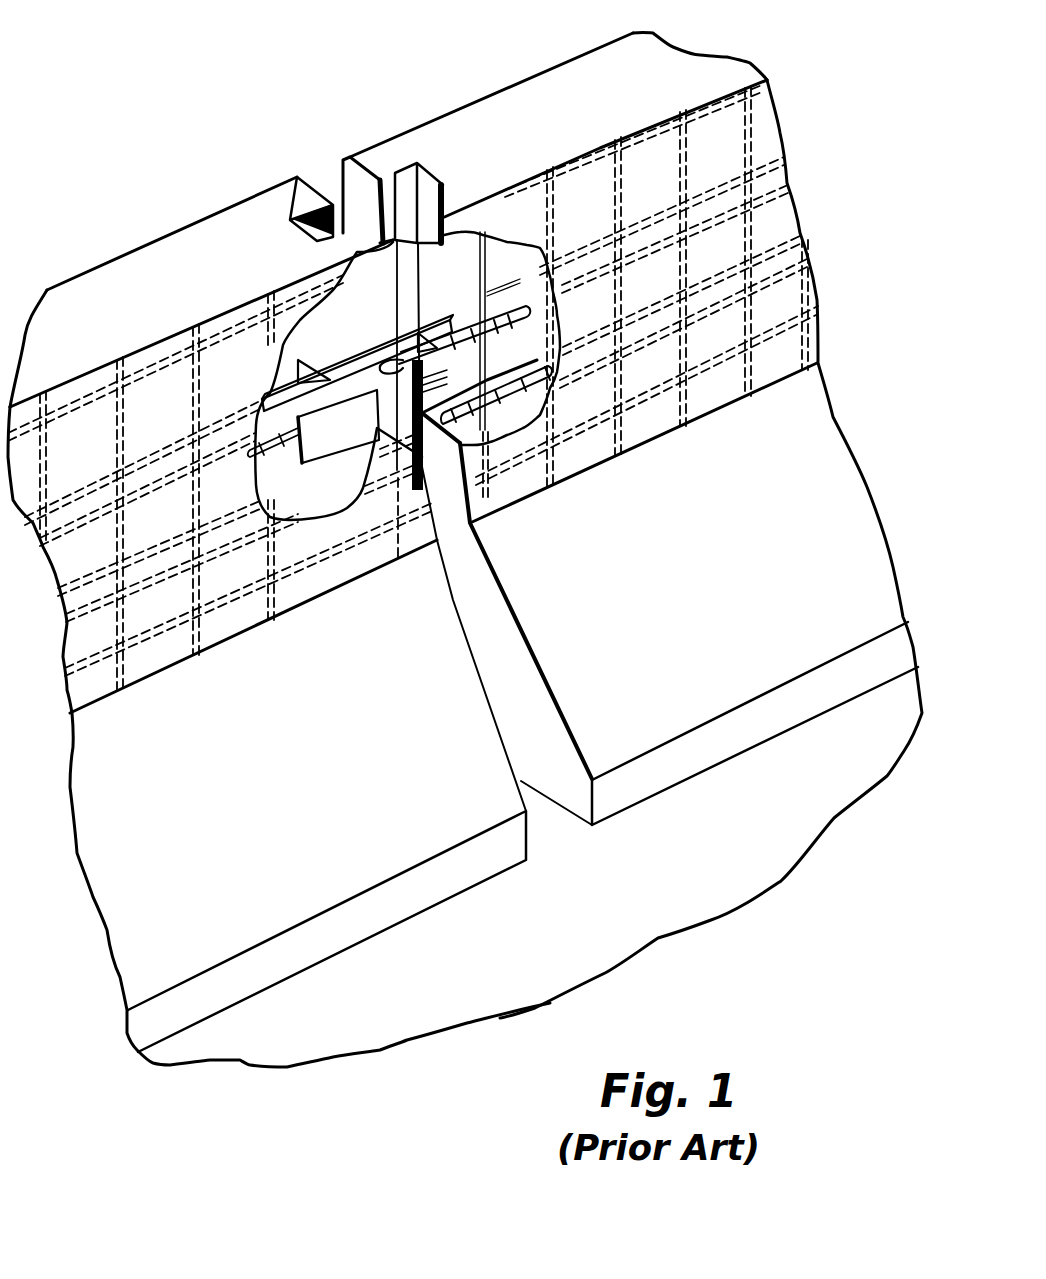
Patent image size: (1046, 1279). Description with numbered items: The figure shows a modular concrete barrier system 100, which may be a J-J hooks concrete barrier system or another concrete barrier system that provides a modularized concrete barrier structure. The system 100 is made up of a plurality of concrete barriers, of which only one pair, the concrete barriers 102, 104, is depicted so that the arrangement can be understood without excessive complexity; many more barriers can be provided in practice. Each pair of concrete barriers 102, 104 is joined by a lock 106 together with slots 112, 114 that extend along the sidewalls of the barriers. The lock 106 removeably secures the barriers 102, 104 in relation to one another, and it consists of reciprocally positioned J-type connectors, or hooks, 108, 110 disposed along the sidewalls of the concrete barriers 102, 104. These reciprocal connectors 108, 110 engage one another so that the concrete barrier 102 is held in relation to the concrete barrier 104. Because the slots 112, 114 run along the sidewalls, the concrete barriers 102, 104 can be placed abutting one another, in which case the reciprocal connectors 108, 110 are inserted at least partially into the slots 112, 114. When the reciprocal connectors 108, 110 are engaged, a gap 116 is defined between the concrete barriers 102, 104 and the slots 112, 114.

The modular concrete barrier system 100 is at (178, 103).
The concrete barrier 102 is at (85, 271).
The concrete barrier 104 is at (590, 50).
The lock 106 is at (391, 329).
The J-type connector 108 is at (373, 403).
The J-type connector 110 is at (357, 350).
The slot 112 is at (402, 204).
The slot 114 is at (322, 234).
The gap 116 is at (334, 191).